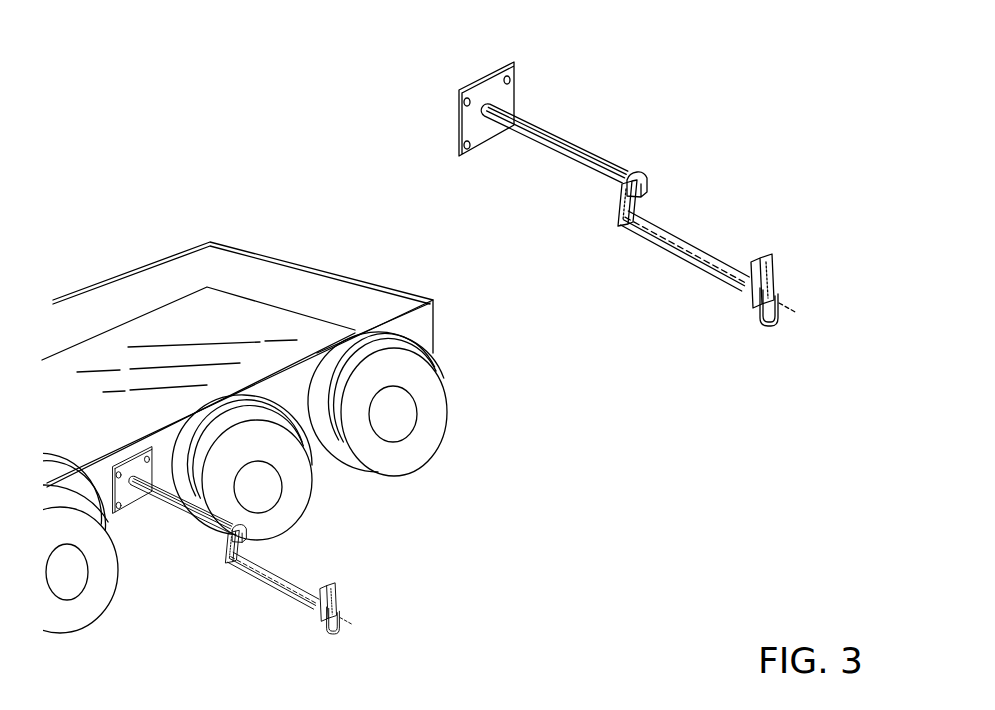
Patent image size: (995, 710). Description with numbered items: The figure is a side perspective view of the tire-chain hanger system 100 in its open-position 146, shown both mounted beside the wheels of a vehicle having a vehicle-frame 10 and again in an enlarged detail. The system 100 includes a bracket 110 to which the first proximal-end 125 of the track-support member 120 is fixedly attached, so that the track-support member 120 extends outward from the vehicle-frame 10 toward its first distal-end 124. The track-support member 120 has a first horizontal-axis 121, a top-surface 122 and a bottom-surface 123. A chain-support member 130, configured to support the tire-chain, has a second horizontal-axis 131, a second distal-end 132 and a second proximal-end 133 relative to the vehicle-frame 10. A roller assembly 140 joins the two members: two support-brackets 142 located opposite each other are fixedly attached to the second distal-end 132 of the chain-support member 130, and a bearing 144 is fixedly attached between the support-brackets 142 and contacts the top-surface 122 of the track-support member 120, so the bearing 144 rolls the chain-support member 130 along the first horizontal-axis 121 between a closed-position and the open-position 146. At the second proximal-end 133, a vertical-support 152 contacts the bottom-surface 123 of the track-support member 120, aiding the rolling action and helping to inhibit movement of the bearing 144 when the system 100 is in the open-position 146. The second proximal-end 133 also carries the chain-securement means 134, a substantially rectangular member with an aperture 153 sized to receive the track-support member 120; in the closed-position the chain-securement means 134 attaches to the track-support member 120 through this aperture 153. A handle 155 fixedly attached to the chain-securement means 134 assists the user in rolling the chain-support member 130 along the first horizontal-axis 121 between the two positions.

The vehicle-frame 10 is at (416, 322).
The tire-chain hanger system 100 is at (676, 78).
The bracket 110 is at (479, 124).
The track-support member 120 is at (557, 164).
The first horizontal-axis 121 is at (655, 197).
The top-surface 122 is at (551, 129).
The bottom-surface 123 is at (519, 134).
The first distal-end 124 is at (620, 167).
The first proximal-end 125 is at (497, 102).
The chain-support member 130 is at (669, 255).
The second horizontal-axis 131 is at (800, 315).
The second distal-end 132 is at (743, 289).
The second proximal-end 133 is at (644, 215).
The chain-securement means 134 is at (769, 258).
The roller assembly 140 is at (650, 167).
The support-brackets 142 is at (615, 219).
The bearing 144 is at (636, 164).
The open-position 146 is at (699, 101).
The vertical-support 152 is at (613, 206).
The aperture 153 is at (770, 271).
The handle 155 is at (765, 330).